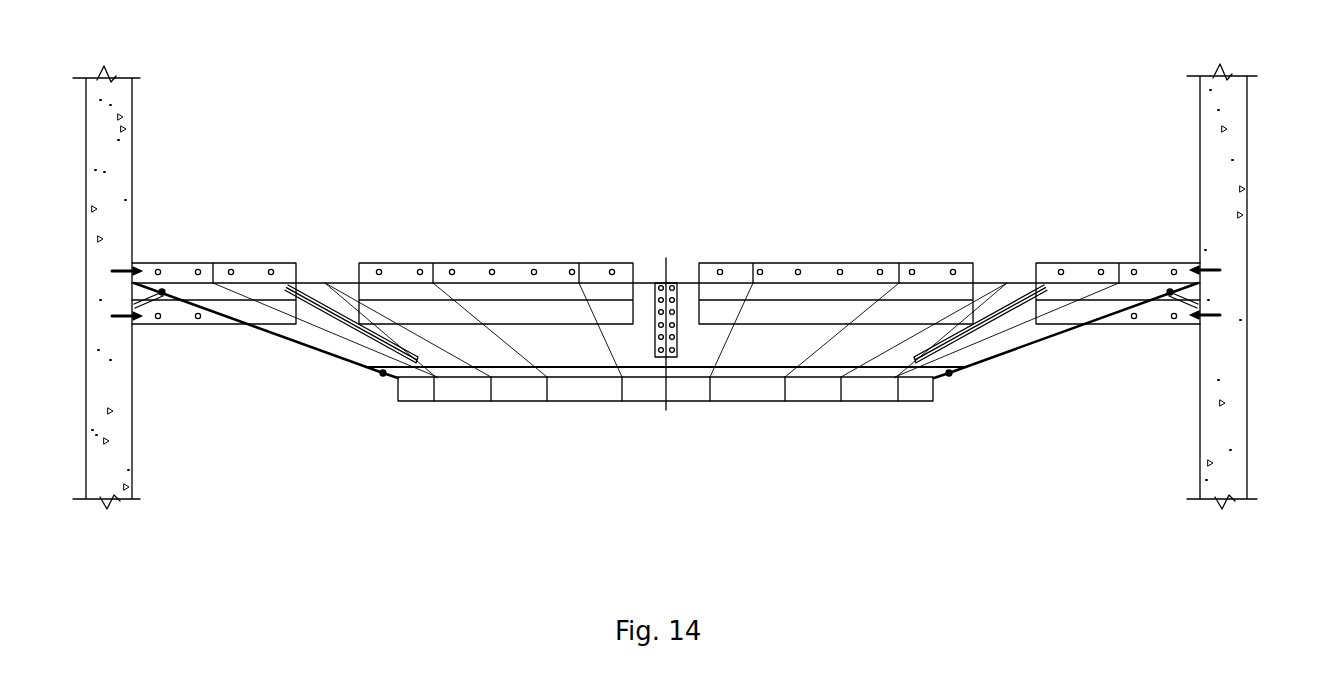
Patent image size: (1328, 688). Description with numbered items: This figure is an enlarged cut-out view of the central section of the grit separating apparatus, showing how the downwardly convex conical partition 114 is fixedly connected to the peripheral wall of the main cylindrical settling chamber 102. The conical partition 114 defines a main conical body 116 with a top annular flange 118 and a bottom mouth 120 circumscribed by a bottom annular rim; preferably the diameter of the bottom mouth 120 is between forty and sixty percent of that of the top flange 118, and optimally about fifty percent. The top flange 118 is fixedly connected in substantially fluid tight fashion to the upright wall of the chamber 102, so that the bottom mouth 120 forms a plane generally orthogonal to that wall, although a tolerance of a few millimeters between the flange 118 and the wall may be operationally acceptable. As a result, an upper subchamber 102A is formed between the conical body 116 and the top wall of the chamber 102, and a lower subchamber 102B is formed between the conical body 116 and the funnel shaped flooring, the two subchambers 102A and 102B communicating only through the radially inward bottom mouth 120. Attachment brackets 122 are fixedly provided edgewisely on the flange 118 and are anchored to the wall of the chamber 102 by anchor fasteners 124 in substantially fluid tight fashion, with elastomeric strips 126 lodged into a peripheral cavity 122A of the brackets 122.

The main cylindrical settling chamber 102 is at (102, 148).
The upper subchamber 102A is at (883, 119).
The lower subchamber 102B is at (1090, 464).
The conical partition 114 is at (507, 258).
The main conical body 116 is at (735, 345).
The top annular flange 118 is at (318, 282).
The bottom mouth 120 is at (560, 403).
The attachment brackets 122 is at (178, 262).
The peripheral cavity 122A is at (142, 313).
The anchor fasteners 124 is at (1208, 314).
The elastomeric strips 126 is at (132, 287).